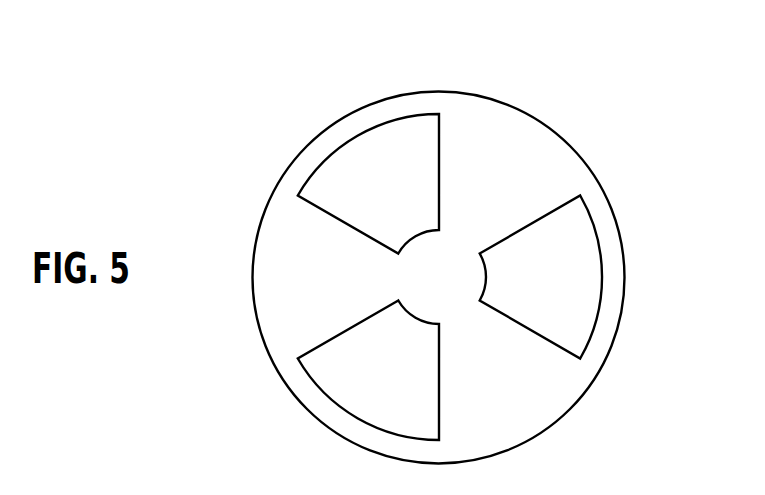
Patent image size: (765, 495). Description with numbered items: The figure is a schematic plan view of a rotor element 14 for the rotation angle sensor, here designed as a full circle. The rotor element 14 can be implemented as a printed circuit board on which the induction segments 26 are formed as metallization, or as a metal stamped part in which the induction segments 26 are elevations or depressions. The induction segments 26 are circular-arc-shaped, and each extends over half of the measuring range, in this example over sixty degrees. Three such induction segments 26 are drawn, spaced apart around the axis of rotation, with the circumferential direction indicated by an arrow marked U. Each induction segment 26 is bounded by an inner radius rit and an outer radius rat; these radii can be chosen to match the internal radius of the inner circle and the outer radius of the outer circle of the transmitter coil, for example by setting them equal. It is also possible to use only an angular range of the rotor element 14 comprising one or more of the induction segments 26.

The rotor element 14 is at (578, 97).
The induction segment 26 is at (367, 157).
The outer radius rat is at (439, 277).
The inner radius rit is at (485, 287).
The circumferential direction U is at (708, 200).